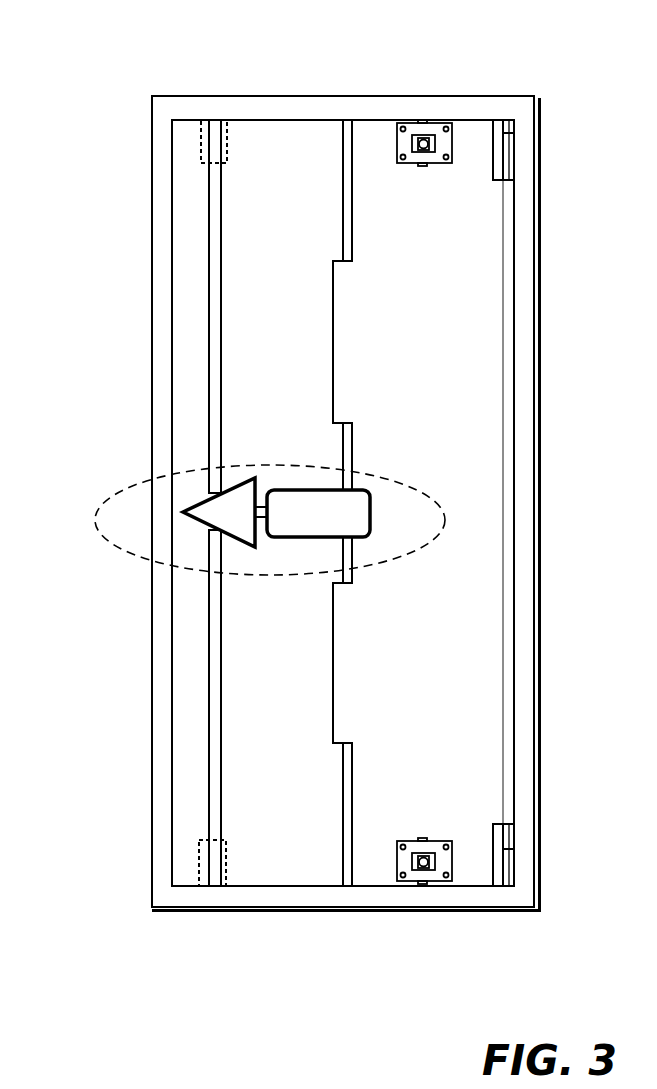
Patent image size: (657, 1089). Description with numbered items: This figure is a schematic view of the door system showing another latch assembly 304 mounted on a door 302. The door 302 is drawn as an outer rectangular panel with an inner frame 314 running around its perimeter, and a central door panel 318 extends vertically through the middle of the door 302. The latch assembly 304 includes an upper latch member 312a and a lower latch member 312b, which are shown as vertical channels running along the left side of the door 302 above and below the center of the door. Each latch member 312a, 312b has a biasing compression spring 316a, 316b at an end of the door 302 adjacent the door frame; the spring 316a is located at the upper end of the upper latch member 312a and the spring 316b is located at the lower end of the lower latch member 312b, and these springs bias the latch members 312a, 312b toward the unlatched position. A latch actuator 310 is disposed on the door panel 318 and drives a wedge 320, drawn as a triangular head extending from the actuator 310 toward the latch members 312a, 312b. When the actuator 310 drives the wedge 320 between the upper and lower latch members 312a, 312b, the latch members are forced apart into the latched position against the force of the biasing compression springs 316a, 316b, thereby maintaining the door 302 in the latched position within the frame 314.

The door 302 is at (300, 143).
The latch assembly 304 is at (131, 482).
The latch actuator 310 is at (362, 496).
The upper latch member 312a is at (213, 263).
The lower latch member 312b is at (207, 732).
The frame 314 is at (397, 103).
The biasing compression spring 316a is at (202, 130).
The biasing compression spring 316b is at (192, 857).
The door panel 318 is at (308, 358).
The wedge 320 is at (217, 505).